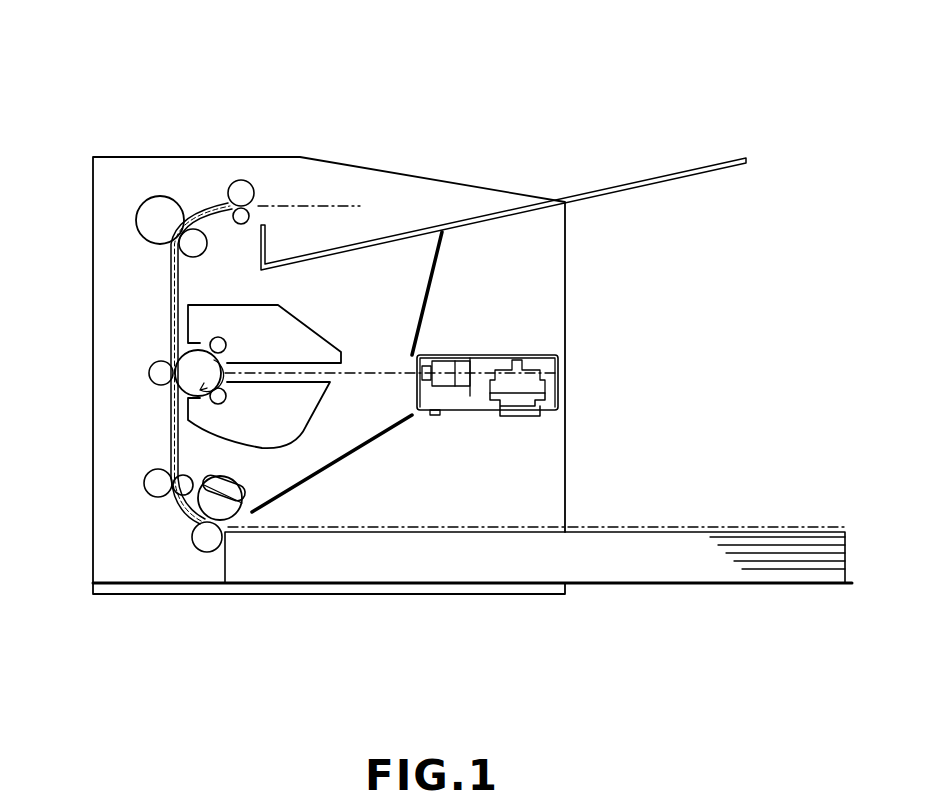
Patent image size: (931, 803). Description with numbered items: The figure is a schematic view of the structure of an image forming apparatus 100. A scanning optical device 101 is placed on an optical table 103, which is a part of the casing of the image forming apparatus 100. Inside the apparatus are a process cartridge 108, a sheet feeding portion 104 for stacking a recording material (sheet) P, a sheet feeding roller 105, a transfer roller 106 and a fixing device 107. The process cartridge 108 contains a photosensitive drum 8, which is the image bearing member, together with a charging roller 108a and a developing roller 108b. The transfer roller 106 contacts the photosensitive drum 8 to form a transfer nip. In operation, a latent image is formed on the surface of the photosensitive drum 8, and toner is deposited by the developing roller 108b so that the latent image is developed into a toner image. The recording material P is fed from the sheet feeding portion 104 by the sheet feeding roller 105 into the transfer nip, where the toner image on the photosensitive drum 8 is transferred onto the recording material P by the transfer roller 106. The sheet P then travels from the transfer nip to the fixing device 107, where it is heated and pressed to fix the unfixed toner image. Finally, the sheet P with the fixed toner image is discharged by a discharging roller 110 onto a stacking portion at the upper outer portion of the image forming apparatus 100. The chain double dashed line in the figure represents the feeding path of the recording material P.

The image forming apparatus 100 is at (130, 172).
The scanning optical device 101 is at (515, 355).
The optical table 103 is at (482, 410).
The sheet feeding portion 104 is at (590, 583).
The sheet feeding roller 105 is at (247, 495).
The transfer roller 106 is at (160, 368).
The fixing device 107 is at (163, 203).
The process cartridge 108 is at (298, 324).
The charging roller 108a is at (219, 345).
The developing roller 108b is at (228, 396).
The discharging roller 110 is at (243, 190).
The photosensitive drum 8 is at (196, 362).
The recording material P is at (757, 545).